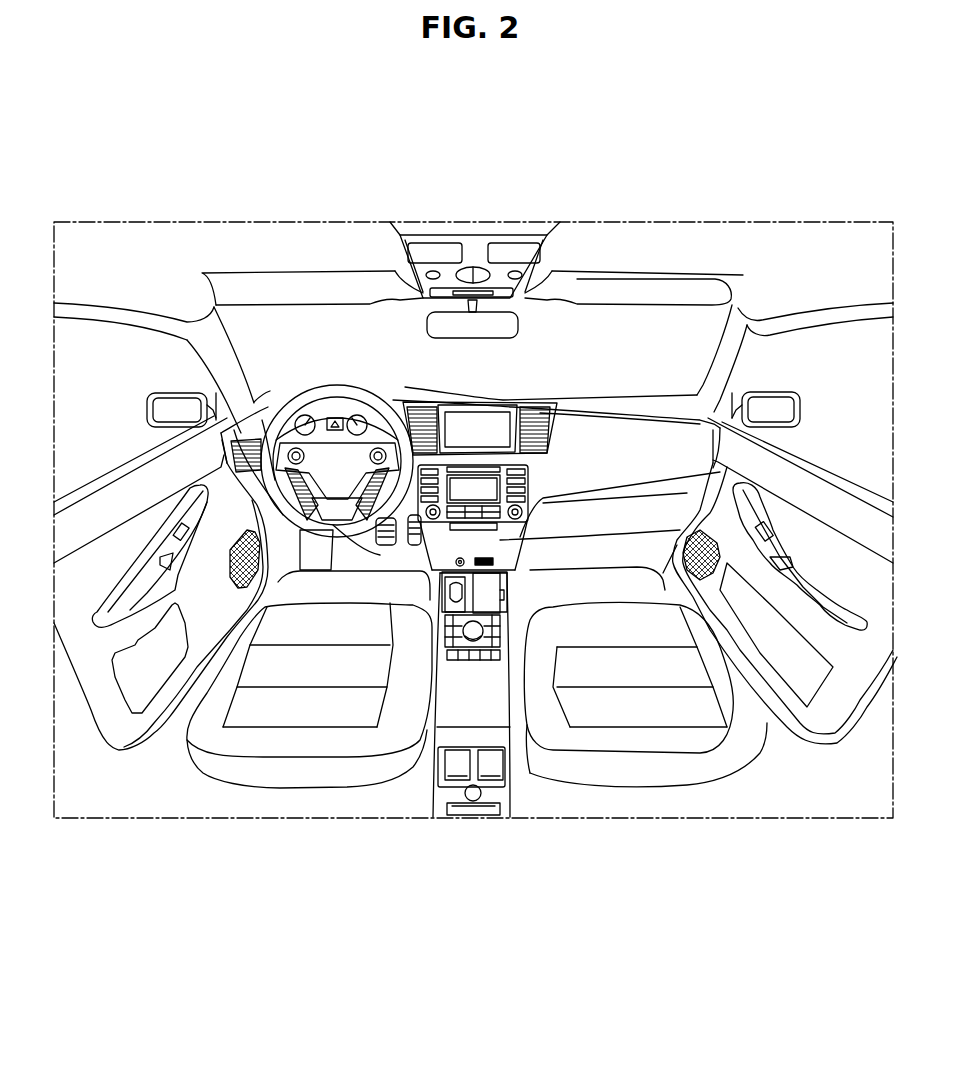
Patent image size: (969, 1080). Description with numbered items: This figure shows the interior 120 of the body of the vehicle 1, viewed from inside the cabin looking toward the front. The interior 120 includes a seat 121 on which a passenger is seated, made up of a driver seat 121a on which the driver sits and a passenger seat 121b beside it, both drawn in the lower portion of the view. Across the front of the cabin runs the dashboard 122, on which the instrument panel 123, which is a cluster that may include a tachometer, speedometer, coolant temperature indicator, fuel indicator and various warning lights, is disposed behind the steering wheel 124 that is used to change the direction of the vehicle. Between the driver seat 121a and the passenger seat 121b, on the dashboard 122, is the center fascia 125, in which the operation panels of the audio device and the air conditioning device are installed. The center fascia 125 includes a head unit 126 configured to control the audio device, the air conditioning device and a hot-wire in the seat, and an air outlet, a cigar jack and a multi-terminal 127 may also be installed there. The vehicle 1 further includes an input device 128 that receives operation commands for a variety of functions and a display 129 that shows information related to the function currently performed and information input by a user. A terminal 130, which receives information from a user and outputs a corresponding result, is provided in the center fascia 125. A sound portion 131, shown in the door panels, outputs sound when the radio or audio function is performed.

The vehicle 1 is at (256, 168).
The interior 120 is at (650, 265).
The seat 121 is at (477, 747).
The driver seat 121a is at (299, 770).
The passenger seat 121b is at (645, 720).
The dashboard 122 is at (652, 425).
The instrument panel 123 is at (323, 398).
The steering wheel 124 is at (346, 392).
The center fascia 125 is at (520, 537).
The head unit 126 is at (520, 507).
The multi-terminal 127 is at (503, 563).
The input device 128 is at (508, 610).
The display 129 is at (538, 451).
The terminal 130 is at (503, 401).
The sound portion 131 is at (255, 563).